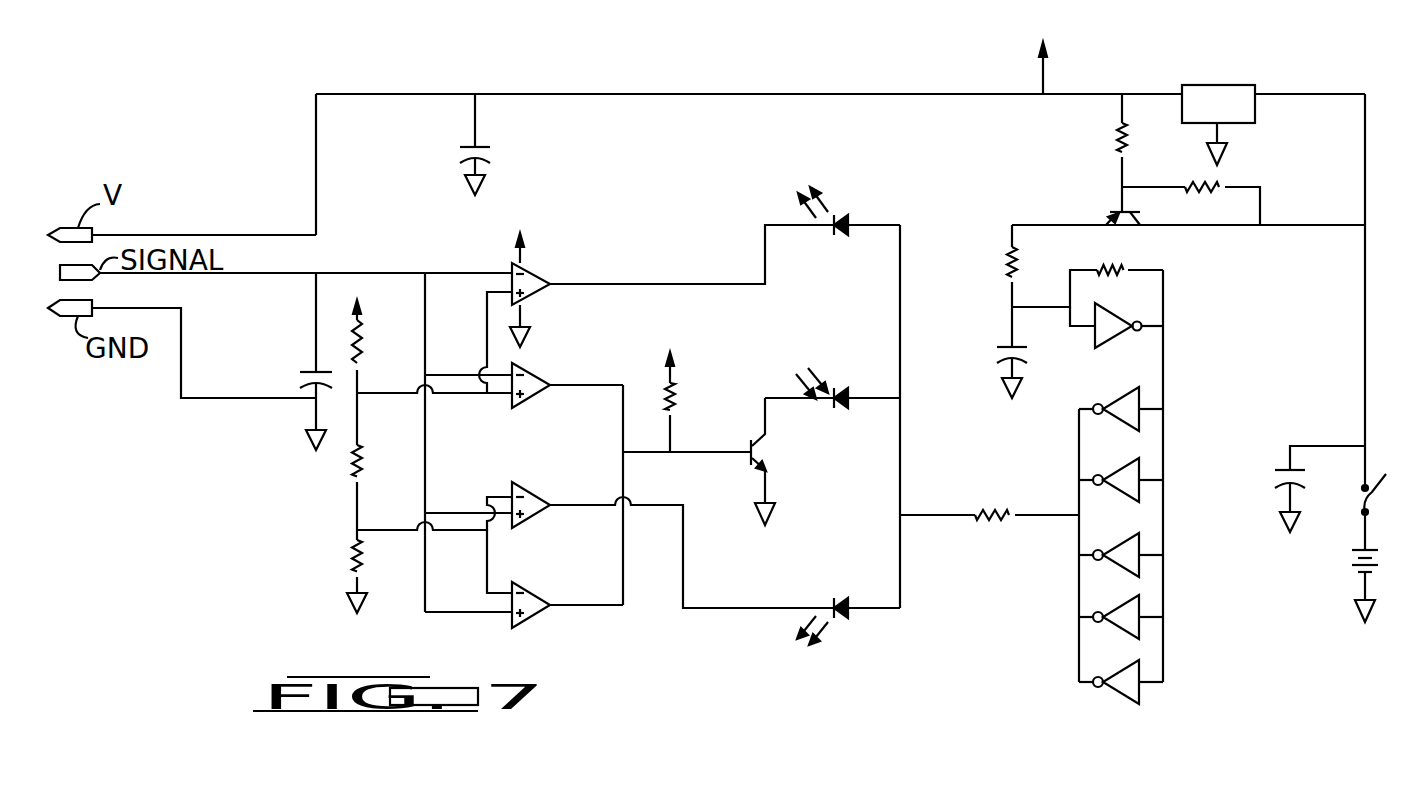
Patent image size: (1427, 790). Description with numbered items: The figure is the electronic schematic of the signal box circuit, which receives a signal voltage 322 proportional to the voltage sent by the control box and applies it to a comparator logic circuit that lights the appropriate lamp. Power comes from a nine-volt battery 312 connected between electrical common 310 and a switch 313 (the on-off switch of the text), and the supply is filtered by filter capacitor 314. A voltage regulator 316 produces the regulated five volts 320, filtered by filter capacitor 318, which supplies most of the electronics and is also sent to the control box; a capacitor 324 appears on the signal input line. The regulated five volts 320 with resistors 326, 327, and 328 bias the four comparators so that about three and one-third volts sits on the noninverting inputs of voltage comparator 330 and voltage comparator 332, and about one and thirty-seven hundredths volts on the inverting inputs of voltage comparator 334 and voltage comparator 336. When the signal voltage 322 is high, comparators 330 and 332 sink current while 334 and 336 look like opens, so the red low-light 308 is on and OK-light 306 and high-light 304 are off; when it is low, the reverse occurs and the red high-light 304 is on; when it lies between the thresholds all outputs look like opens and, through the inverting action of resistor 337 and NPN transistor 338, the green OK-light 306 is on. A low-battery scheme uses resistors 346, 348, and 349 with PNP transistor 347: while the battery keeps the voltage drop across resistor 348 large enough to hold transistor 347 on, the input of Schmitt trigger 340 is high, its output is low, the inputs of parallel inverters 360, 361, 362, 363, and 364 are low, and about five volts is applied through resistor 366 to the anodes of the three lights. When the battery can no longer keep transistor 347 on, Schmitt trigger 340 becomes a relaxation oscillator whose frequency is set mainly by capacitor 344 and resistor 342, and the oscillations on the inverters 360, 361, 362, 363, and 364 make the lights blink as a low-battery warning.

The high-light 304 is at (840, 600).
The OK-light 306 is at (840, 388).
The low-light 308 is at (838, 240).
The electrical common 310 is at (1365, 624).
The 9 volt battery 312 is at (1352, 553).
The switch 313 is at (1393, 497).
The filter capacitor 314 is at (1270, 458).
The voltage regulator 316 is at (1200, 85).
The filter capacitor 318 is at (480, 150).
The regulated 5 volts 320 is at (357, 312).
The signal voltage 322 is at (362, 272).
The capacitor 324 is at (305, 370).
The resistor 326 is at (360, 365).
The resistor 327 is at (352, 470).
The resistor 328 is at (350, 552).
The voltage comparator 330 is at (545, 272).
The voltage comparator 332 is at (540, 374).
The voltage comparator 334 is at (537, 490).
The voltage comparator 336 is at (537, 590).
The resistor 337 is at (673, 388).
The NPN transistor 338 is at (768, 460).
The Schmitt trigger 340 is at (1112, 348).
The resistor 342 is at (1130, 268).
The capacitor 344 is at (1005, 342).
The resistor 346 is at (1008, 256).
The PNP transistor 347 is at (1116, 210).
The resistor 348 is at (1230, 186).
The resistor 349 is at (1118, 140).
The parallel inverter 360 is at (1142, 390).
The parallel inverter 361 is at (1140, 462).
The parallel inverter 362 is at (1140, 535).
The parallel inverter 363 is at (1140, 597).
The parallel inverter 364 is at (1140, 660).
The resistor 366 is at (1000, 508).